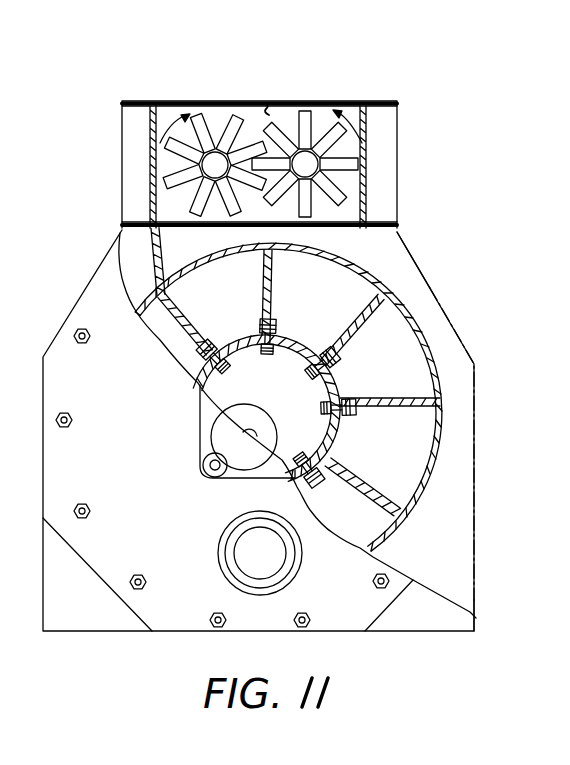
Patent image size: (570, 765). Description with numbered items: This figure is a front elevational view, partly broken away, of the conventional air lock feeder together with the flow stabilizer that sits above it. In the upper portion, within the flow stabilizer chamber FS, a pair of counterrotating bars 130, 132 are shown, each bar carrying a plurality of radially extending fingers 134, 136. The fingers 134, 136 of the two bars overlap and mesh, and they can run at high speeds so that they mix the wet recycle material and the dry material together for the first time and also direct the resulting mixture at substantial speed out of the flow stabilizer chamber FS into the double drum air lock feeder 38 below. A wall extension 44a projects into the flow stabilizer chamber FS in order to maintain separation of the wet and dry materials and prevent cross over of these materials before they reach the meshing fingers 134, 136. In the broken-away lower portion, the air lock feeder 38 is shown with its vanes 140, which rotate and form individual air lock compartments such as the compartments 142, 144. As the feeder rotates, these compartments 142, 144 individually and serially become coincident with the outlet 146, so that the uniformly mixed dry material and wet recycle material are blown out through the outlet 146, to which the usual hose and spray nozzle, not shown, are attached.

The counterrotating bar 130 is at (168, 135).
The counterrotating bar 132 is at (354, 136).
The radially extending fingers 134 is at (205, 118).
The radially extending fingers 136 is at (308, 112).
The wall extension 44a is at (269, 110).
The flow stabilizer chamber FS is at (411, 193).
The double drum air lock feeder 38 is at (440, 358).
The vanes 140 is at (365, 318).
The air lock compartment 142 is at (232, 302).
The air lock compartment 144 is at (328, 302).
The outlet 146 is at (238, 556).